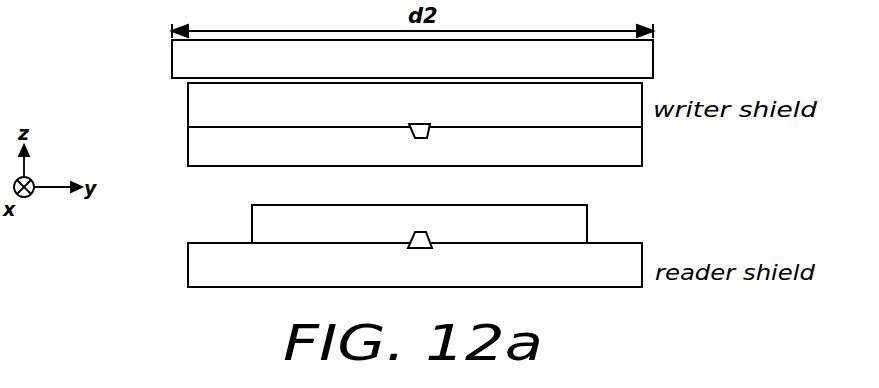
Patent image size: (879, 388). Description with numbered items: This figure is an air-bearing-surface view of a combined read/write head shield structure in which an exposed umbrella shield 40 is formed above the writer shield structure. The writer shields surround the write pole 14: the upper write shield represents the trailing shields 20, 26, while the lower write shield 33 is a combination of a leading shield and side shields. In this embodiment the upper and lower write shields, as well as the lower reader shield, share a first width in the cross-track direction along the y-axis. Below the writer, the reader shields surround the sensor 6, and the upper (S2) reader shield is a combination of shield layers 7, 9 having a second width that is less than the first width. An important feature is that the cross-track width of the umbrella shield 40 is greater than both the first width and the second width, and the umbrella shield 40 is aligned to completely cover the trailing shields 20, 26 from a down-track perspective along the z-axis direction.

The umbrella shield 40 is at (642, 57).
The trailing shield 20 is at (357, 105).
The trailing shield 26 is at (210, 103).
The lower write shield 33 is at (210, 148).
The write pole 14 is at (422, 138).
The shield layer 7 is at (345, 224).
The shield layer 9 is at (268, 227).
The sensor 6 is at (418, 233).